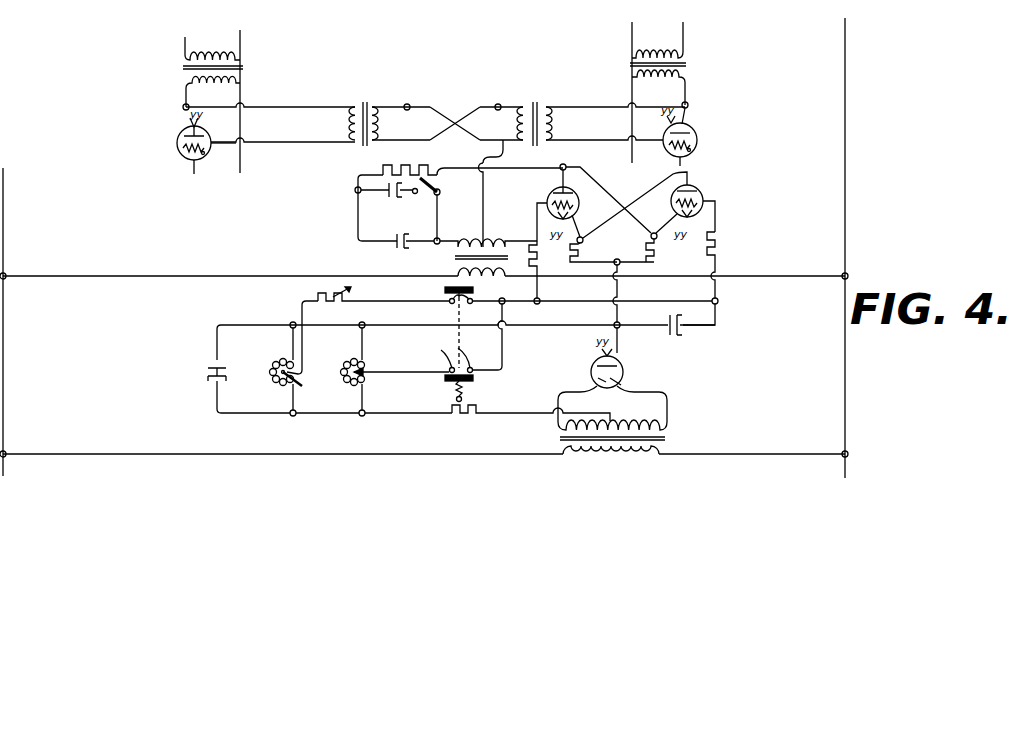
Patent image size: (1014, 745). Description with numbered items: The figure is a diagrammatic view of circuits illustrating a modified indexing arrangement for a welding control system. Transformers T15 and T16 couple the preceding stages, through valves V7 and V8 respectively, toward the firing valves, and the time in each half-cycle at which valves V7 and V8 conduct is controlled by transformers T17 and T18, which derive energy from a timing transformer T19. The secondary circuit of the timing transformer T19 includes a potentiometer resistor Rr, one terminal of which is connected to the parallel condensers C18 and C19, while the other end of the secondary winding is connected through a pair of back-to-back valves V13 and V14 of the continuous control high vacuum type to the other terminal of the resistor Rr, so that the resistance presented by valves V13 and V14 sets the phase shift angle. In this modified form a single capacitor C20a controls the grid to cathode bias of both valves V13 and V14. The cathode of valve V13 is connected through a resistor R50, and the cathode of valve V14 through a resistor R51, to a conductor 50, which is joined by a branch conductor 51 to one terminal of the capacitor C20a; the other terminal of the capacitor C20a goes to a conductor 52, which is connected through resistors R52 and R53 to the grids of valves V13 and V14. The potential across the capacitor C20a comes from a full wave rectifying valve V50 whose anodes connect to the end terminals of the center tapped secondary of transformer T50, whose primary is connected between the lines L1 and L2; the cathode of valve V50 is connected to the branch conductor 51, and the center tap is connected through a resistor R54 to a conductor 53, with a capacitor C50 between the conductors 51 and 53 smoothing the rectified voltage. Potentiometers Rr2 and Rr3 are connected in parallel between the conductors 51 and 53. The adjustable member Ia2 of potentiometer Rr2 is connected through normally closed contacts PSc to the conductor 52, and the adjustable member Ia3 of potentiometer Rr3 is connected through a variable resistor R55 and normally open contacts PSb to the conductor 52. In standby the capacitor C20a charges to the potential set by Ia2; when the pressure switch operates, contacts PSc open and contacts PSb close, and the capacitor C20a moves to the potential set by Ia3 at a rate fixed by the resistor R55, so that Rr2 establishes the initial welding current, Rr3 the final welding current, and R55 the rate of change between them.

The line L1 is at (3, 158).
The line L2 is at (846, 112).
The transformer T15 is at (243, 63).
The transformer T16 is at (630, 67).
The transformer T17 is at (370, 105).
The transformer T18 is at (532, 107).
The timing transformer T19 is at (457, 257).
The transformer T50 is at (665, 439).
The valve V7 is at (178, 137).
The valve V8 is at (697, 131).
The valve V13 is at (554, 190).
The valve V14 is at (706, 190).
The full wave rectifying valve V50 is at (625, 372).
The potentiometer resistor Rr is at (408, 166).
The condenser C18 is at (396, 247).
The condenser C19 is at (384, 204).
The capacitor C20a is at (684, 337).
The capacitor C50 is at (222, 366).
The resistor R50 is at (582, 257).
The resistor R51 is at (660, 259).
The resistor R52 is at (540, 270).
The resistor R53 is at (722, 242).
The resistor R54 is at (463, 418).
The variable resistor R55 is at (332, 312).
The potentiometer Rr2 is at (349, 364).
The potentiometer Rr3 is at (274, 378).
The adjustable member Ia2 is at (367, 371).
The adjustable member Ia3 is at (295, 387).
The normally open contacts PSb is at (449, 305).
The normally closed contacts PSc is at (450, 361).
The conductor 50 is at (621, 286).
The branch conductor 51 is at (614, 309).
The conductor 52 is at (567, 303).
The conductor 53 is at (364, 416).